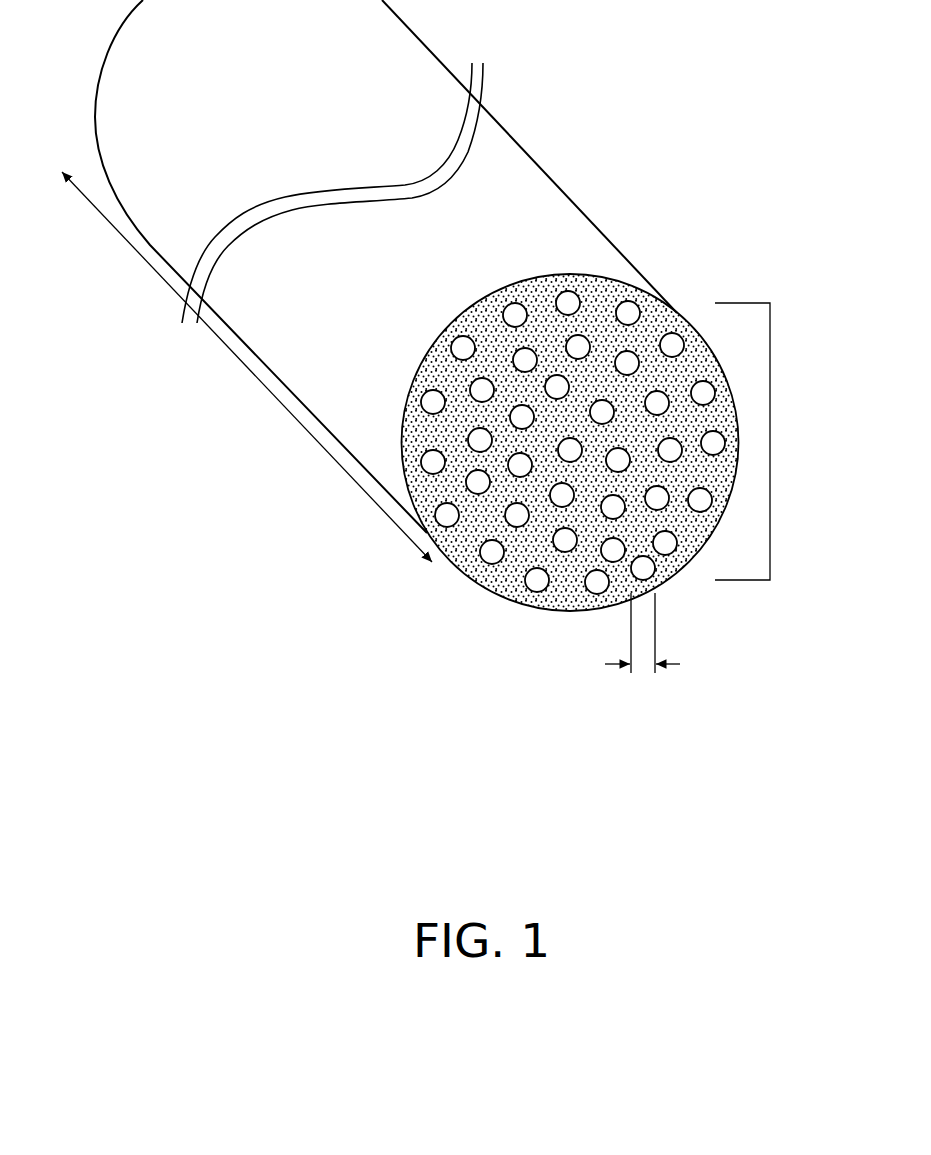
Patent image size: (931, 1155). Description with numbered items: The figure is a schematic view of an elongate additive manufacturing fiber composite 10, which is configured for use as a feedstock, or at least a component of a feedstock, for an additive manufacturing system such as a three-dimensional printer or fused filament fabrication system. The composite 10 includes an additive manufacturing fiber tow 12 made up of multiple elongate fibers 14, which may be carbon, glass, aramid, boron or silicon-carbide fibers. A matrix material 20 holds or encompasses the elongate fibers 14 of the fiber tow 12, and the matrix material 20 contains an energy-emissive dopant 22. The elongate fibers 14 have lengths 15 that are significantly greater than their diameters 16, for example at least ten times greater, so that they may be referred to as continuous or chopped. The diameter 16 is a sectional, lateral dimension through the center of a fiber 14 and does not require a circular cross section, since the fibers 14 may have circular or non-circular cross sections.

The elongate additive manufacturing fiber composite 10 is at (556, 177).
The additive manufacturing fiber tow 12 is at (772, 450).
The elongate fibers 14 is at (512, 304).
The lengths 15 is at (262, 382).
The diameter 16 is at (642, 667).
The matrix material 20 is at (579, 432).
The energy-emissive dopant 22 is at (407, 458).